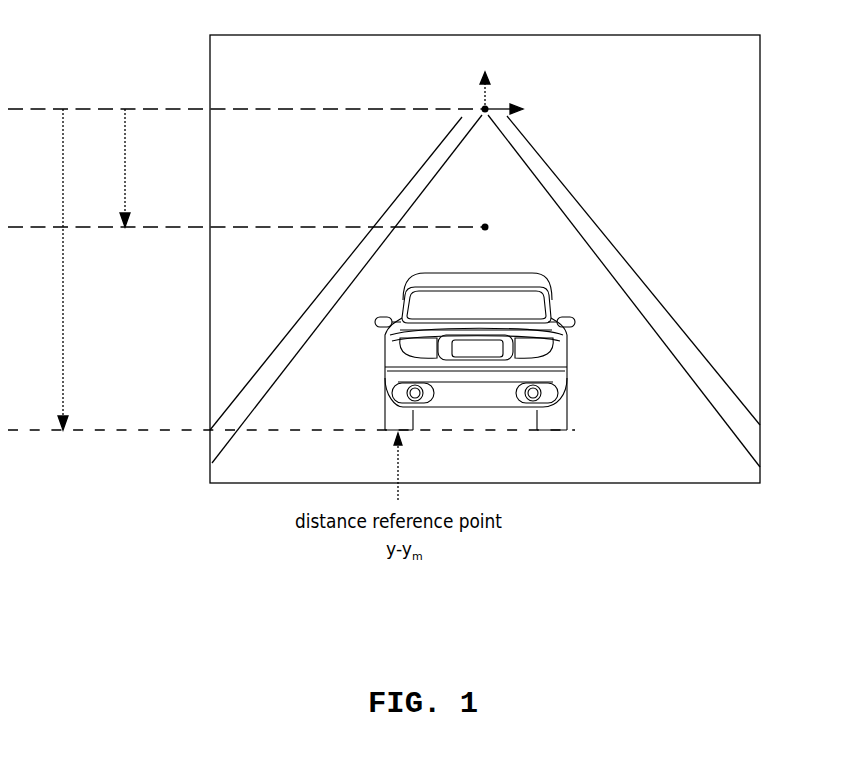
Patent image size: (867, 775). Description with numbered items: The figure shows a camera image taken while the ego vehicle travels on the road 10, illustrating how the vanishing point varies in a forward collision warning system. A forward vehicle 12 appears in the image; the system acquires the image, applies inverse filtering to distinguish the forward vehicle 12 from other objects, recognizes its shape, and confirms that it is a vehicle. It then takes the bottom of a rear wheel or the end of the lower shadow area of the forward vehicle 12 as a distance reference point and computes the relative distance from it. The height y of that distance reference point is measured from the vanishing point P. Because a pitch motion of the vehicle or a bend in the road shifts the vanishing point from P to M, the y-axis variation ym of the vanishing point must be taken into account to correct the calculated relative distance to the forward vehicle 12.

The road 10 is at (579, 203).
The forward vehicle 12 is at (565, 377).
The vanishing point P is at (508, 94).
The varied vanishing point M is at (494, 228).
The height of the distance reference point y is at (57, 269).
The y-axis variation of the vanishing point ym is at (117, 168).